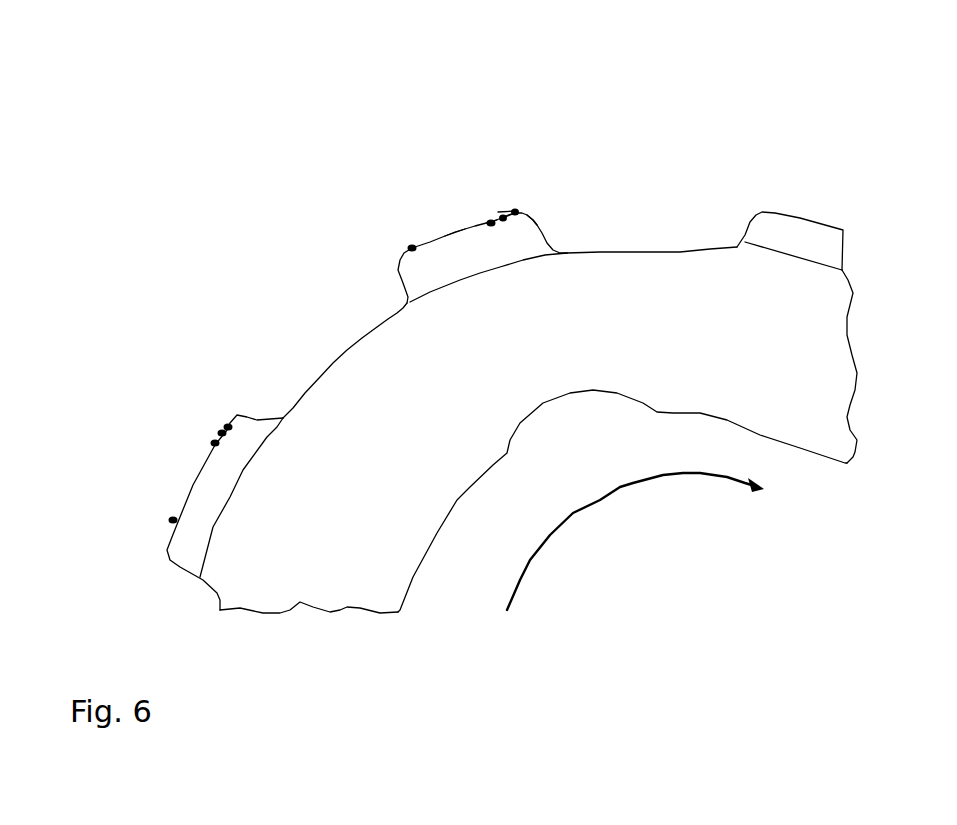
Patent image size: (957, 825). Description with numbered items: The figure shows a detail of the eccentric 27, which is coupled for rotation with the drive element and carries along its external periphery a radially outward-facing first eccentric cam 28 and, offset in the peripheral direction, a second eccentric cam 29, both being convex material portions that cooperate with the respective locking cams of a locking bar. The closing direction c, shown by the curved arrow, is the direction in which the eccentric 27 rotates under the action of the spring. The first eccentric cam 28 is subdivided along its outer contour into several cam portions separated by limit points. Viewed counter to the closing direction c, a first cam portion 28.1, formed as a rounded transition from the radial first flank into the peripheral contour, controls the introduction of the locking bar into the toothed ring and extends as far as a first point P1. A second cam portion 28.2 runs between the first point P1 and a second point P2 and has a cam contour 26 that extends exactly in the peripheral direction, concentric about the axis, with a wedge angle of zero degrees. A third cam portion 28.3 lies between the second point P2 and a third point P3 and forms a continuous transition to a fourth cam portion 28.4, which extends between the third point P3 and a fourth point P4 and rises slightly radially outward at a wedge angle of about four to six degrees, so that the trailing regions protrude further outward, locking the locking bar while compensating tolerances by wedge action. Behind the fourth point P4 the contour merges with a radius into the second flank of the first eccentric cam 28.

The cam contour 26 is at (500, 202).
The eccentric 27 is at (349, 598).
The first eccentric cam 28 is at (417, 285).
The first cam portion 28.1 is at (535, 220).
The second cam portion 28.2 is at (507, 213).
The third cam portion 28.3 is at (493, 221).
The fourth cam portion 28.4 is at (455, 232).
The second eccentric cam 29 is at (763, 225).
The first point P1 is at (515, 212).
The second point P2 is at (503, 218).
The third point P3 is at (491, 223).
The fourth point P4 is at (412, 248).
The closing direction c is at (635, 541).